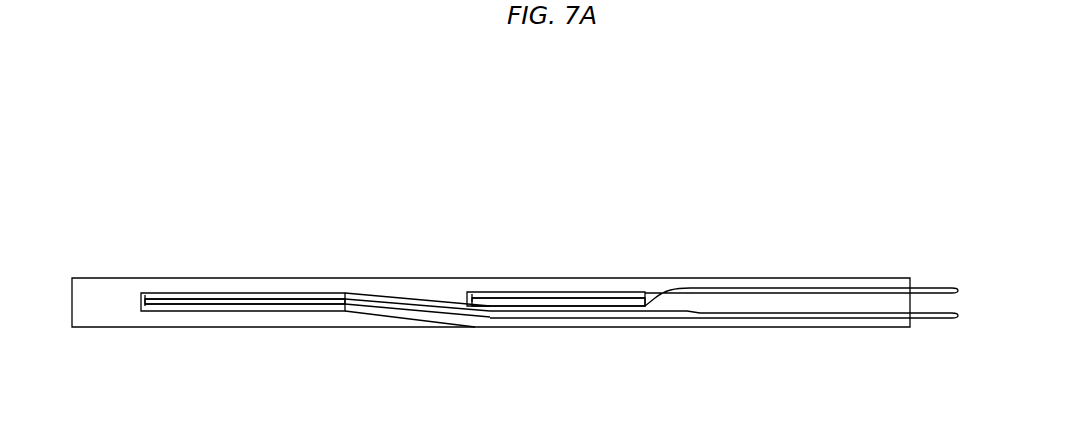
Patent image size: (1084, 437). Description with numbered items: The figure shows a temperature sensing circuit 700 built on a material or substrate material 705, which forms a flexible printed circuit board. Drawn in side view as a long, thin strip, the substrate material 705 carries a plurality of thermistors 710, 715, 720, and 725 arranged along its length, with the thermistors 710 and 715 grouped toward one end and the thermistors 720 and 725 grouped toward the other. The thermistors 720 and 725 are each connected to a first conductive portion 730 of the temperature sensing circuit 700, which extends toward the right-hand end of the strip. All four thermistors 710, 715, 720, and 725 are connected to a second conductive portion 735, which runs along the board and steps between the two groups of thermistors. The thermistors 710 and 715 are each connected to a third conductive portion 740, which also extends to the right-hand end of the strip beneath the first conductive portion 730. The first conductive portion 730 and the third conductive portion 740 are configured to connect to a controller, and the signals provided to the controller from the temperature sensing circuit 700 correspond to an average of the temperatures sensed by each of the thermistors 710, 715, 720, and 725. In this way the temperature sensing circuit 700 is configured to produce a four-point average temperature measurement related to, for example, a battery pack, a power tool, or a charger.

The temperature sensing circuit 700 is at (708, 141).
The substrate material 705 is at (505, 327).
The thermistor 710 is at (152, 298).
The thermistor 715 is at (308, 299).
The thermistor 720 is at (472, 300).
The thermistor 725 is at (640, 299).
The first conductive portion 730 is at (950, 288).
The second conductive portion 735 is at (347, 295).
The third conductive portion 740 is at (950, 318).